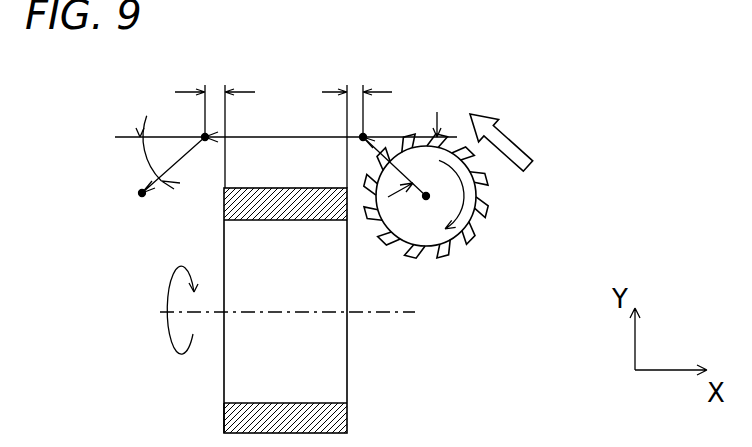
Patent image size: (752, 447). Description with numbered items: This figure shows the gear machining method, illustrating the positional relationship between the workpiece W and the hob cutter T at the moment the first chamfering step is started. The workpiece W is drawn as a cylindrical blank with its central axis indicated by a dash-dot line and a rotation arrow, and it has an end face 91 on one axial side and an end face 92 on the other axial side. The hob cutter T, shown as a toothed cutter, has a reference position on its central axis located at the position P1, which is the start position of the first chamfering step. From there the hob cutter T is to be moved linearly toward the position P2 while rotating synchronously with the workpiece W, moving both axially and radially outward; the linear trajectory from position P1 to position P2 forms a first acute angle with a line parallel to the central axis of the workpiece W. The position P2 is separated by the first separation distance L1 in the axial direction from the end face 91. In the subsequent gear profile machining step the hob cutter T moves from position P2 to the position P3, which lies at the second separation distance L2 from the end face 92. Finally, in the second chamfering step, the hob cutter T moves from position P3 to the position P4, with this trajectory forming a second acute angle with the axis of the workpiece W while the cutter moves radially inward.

The workpiece W is at (347, 370).
The end face on one axial side 91 is at (347, 413).
The end face on the other axial side 92 is at (224, 412).
The hob cutter T is at (490, 205).
The position P1 is at (437, 140).
The position P2 is at (363, 137).
The position P3 is at (205, 137).
The position P4 is at (142, 193).
The first separation distance L1 is at (357, 124).
The second separation distance L2 is at (215, 123).